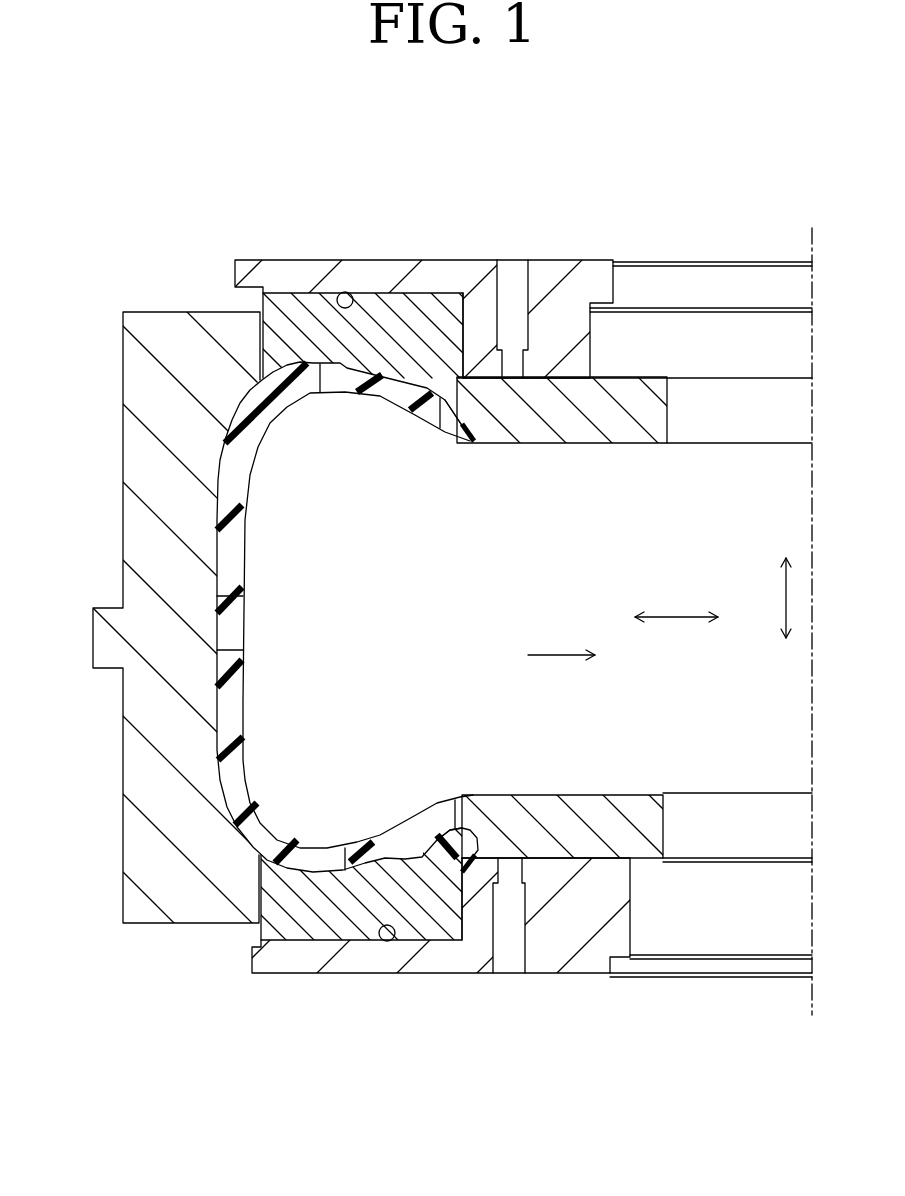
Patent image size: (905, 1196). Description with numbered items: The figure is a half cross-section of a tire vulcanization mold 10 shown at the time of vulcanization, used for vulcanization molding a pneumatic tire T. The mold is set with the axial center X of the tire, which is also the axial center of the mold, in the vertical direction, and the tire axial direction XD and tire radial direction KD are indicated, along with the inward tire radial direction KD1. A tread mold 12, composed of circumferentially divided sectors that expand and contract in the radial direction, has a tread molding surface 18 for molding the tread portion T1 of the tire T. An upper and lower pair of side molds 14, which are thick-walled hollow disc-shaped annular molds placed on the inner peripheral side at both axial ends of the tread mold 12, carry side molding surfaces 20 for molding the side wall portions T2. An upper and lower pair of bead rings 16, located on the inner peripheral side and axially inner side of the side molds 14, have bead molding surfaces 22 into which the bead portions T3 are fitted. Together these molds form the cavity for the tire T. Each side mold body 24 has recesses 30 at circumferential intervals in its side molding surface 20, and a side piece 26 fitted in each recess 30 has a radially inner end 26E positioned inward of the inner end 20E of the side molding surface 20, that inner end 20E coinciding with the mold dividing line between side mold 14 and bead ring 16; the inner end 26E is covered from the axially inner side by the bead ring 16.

The tire vulcanization mold 10 is at (362, 172).
The tread mold 12 is at (399, 617).
The side mold 14 is at (448, 617).
The bead ring 16 is at (633, 617).
The tread molding surface 18 is at (347, 617).
The side molding surface 20 is at (385, 618).
The inner end of side molding surface 20E is at (379, 620).
The bead molding surface 22 is at (463, 648).
The side mold body 24 is at (589, 623).
The side piece 26 is at (370, 614).
The inner end of side piece 26E is at (523, 569).
The recess 30 is at (353, 628).
The tire T is at (259, 577).
The tread portion T1 is at (261, 633).
The side wall portion T2 is at (305, 617).
The bead portion T3 is at (419, 613).
The axial center X is at (828, 597).
The tire radial direction KD is at (676, 603).
The inward tire radial direction KD1 is at (561, 639).
The tire axial direction XD is at (764, 598).